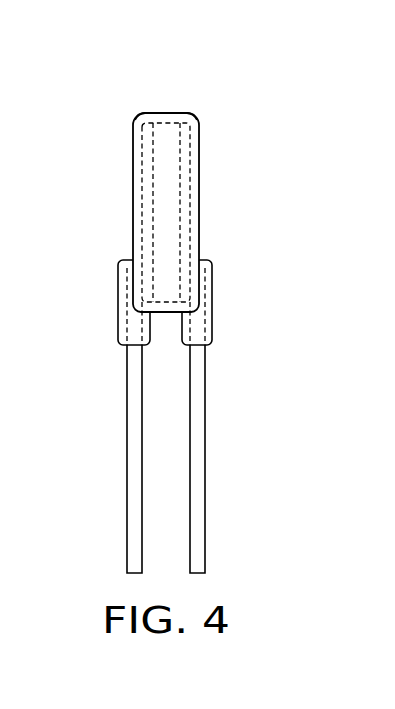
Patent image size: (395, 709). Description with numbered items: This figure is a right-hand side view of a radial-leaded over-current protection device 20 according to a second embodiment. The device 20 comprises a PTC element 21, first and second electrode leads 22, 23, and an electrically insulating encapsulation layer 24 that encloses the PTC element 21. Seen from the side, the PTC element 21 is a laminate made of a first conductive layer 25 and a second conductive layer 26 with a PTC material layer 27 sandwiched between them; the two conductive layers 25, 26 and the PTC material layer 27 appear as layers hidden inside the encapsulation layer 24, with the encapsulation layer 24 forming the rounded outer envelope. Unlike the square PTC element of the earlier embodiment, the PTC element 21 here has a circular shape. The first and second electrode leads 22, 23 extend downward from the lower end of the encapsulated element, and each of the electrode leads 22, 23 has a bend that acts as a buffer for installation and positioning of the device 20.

The radial-leaded over-current protection device 20 is at (203, 83).
The PTC element 21 is at (172, 137).
The first electrode lead 22 is at (206, 462).
The second electrode lead 23 is at (126, 462).
The electrically insulating encapsulation layer 24 is at (167, 112).
The first conductive layer 25 is at (184, 176).
The second conductive layer 26 is at (145, 175).
The PTC material layer 27 is at (167, 213).